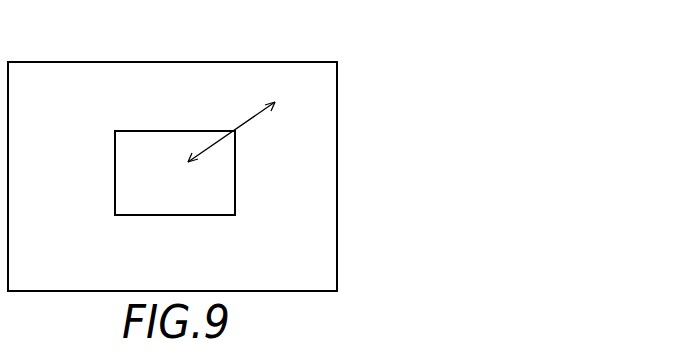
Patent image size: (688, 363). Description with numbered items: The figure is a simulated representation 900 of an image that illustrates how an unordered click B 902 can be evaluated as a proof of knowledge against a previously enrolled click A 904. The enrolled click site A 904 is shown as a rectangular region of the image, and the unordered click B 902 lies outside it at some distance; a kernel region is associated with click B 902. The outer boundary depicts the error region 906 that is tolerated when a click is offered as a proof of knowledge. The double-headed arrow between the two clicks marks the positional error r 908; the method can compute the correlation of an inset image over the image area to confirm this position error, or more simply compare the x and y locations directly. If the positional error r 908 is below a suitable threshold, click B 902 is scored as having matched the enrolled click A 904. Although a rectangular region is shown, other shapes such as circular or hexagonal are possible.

The simulated representation 900 is at (57, 50).
The unordered click B 902 is at (302, 94).
The enrolled click A 904 is at (165, 168).
The error region 906 is at (338, 167).
The position error r 908 is at (265, 138).